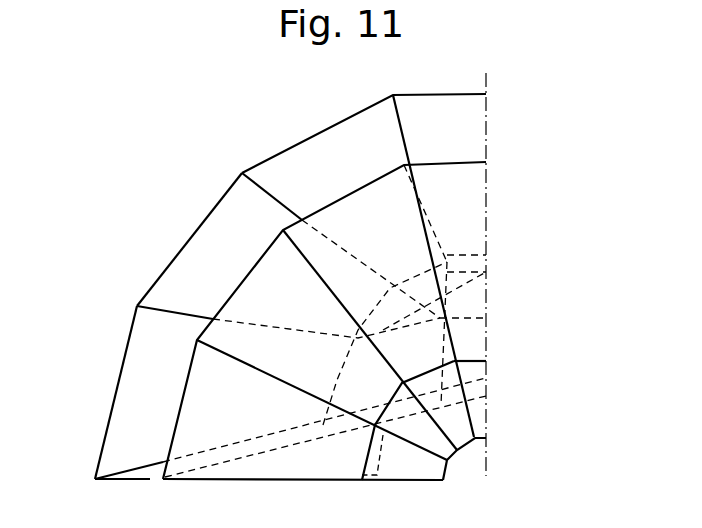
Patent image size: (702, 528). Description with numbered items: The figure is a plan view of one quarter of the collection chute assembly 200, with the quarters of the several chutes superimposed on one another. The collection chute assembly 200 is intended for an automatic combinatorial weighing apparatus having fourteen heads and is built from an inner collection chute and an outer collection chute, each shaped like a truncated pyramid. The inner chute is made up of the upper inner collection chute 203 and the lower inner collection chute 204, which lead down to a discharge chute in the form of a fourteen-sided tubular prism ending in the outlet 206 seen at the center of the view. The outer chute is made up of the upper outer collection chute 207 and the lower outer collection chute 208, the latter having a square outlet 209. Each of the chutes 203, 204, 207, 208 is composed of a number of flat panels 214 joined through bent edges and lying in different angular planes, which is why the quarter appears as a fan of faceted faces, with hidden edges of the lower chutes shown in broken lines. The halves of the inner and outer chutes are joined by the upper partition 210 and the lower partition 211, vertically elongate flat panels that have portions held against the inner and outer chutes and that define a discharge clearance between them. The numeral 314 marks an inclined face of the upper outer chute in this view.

The collection chute assembly 200 is at (178, 189).
The upper inner collection chute 203 is at (182, 391).
The lower inner collection chute 204 is at (370, 448).
The outlet 206 is at (417, 420).
The upper outer collection chute 207 is at (302, 142).
The lower outer collection chute 208 is at (464, 255).
The square outlet 209 is at (476, 334).
The upper partition 210 is at (139, 465).
The lower partition 211 is at (450, 460).
The flat panel 214 is at (302, 465).
The inclined face 314 is at (263, 289).